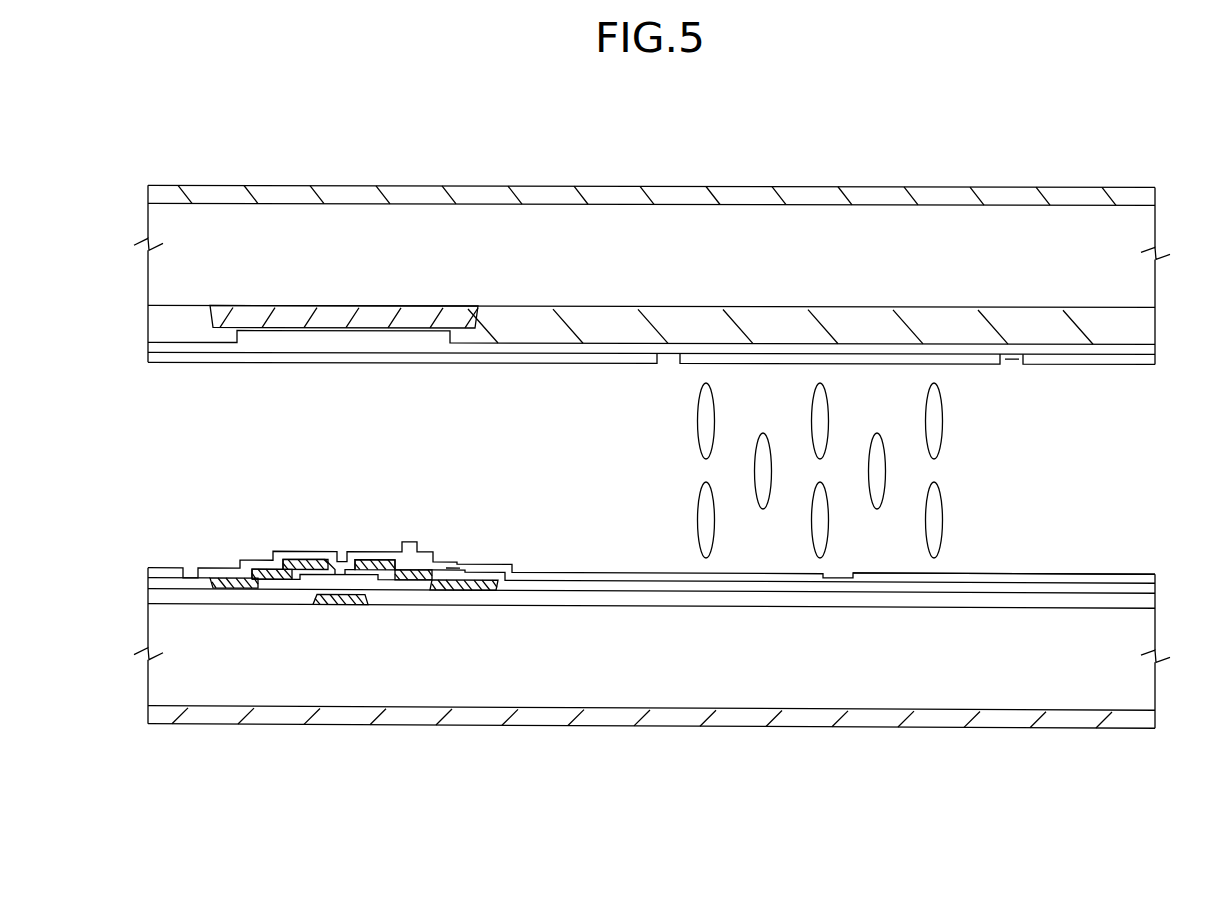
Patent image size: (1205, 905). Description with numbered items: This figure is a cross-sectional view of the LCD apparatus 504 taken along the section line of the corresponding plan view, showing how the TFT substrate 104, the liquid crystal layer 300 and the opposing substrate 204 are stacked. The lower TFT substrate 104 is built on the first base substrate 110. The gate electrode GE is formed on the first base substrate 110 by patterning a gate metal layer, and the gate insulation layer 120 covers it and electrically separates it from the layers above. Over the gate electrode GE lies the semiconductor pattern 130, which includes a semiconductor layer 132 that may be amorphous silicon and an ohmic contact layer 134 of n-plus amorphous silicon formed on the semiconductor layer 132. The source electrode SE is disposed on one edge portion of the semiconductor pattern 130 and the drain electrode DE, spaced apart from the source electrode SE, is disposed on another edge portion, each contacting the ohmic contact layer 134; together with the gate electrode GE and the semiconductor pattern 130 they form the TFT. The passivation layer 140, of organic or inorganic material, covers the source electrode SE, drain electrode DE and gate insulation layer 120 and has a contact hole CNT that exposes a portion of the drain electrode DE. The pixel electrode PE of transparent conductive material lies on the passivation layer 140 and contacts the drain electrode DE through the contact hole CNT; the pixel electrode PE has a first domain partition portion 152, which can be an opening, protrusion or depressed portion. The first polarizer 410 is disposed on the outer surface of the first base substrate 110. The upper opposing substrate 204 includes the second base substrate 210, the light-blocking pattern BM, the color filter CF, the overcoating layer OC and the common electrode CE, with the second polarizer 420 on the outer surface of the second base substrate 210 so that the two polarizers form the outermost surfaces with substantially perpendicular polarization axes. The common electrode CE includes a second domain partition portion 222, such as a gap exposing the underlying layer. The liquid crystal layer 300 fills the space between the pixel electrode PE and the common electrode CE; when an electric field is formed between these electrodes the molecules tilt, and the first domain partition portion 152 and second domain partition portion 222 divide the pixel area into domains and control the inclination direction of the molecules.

The LCD apparatus 504 is at (665, 105).
The opposing substrate 204 is at (135, 203).
The liquid crystal layer 300 is at (135, 366).
The TFT substrate 104 is at (135, 570).
The second base substrate 210 is at (228, 228).
The light-blocking pattern BM is at (349, 306).
The second polarizer 420 is at (445, 190).
The color filter CF is at (532, 330).
The overcoating layer OC is at (687, 352).
The common electrode CE is at (837, 362).
The second domain partition portion 222 is at (1013, 356).
The first polarizer 410 is at (205, 708).
The first base substrate 110 is at (628, 690).
The gate insulation layer 120 is at (720, 600).
The first domain partition portion 152 is at (835, 581).
The passivation layer 140 is at (985, 583).
The pixel electrode PE is at (1070, 574).
The thin film transistor TFT is at (480, 830).
The source electrode SE is at (283, 590).
The gate electrode GE is at (342, 606).
The drain electrode DE is at (375, 580).
The semiconductor pattern 130 is at (507, 790).
The semiconductor layer 132 is at (383, 562).
The ohmic contact layer 134 is at (405, 580).
The contact hole CNT is at (453, 570).